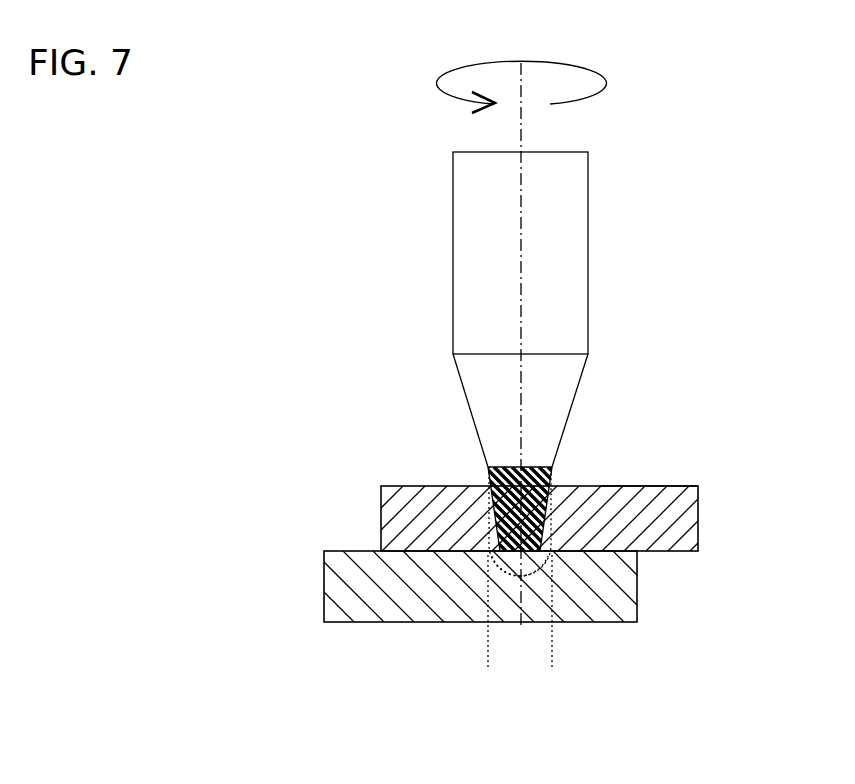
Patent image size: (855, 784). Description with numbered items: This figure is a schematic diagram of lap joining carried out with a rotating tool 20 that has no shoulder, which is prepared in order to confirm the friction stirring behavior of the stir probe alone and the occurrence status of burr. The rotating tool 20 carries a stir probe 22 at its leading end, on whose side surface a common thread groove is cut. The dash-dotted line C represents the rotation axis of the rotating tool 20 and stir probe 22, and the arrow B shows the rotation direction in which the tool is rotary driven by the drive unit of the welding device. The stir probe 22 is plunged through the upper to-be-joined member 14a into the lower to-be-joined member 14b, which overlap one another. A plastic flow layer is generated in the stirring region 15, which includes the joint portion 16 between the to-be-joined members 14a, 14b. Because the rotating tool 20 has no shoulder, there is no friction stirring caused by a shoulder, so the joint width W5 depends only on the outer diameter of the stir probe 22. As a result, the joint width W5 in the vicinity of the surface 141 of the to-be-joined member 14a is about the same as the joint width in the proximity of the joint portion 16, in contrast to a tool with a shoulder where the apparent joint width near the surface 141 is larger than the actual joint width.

The rotating tool with no shoulder 20 is at (588, 190).
The arrow showing the rotation direction B is at (607, 79).
The rotation axis C is at (521, 128).
The to-be-joined member 14a is at (698, 507).
The to-be-joined member 14b is at (637, 575).
The surface of the to-be-joined member 141 is at (652, 486).
The stir probe 22 is at (492, 536).
The stirring region 15 is at (533, 577).
The joint portion 16 is at (507, 563).
The joint width W5 is at (500, 646).